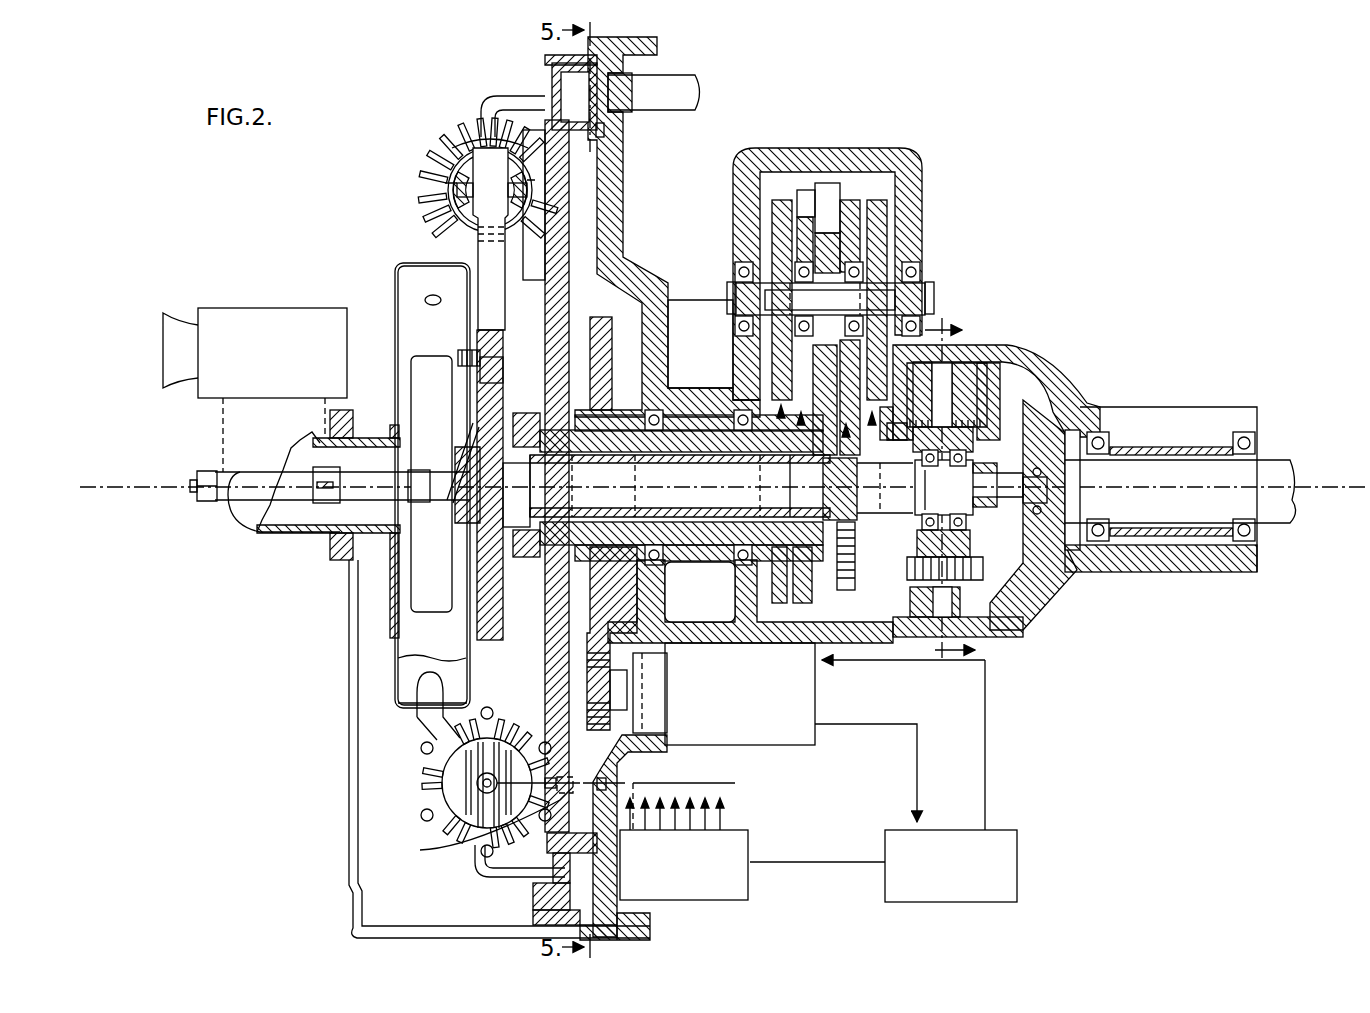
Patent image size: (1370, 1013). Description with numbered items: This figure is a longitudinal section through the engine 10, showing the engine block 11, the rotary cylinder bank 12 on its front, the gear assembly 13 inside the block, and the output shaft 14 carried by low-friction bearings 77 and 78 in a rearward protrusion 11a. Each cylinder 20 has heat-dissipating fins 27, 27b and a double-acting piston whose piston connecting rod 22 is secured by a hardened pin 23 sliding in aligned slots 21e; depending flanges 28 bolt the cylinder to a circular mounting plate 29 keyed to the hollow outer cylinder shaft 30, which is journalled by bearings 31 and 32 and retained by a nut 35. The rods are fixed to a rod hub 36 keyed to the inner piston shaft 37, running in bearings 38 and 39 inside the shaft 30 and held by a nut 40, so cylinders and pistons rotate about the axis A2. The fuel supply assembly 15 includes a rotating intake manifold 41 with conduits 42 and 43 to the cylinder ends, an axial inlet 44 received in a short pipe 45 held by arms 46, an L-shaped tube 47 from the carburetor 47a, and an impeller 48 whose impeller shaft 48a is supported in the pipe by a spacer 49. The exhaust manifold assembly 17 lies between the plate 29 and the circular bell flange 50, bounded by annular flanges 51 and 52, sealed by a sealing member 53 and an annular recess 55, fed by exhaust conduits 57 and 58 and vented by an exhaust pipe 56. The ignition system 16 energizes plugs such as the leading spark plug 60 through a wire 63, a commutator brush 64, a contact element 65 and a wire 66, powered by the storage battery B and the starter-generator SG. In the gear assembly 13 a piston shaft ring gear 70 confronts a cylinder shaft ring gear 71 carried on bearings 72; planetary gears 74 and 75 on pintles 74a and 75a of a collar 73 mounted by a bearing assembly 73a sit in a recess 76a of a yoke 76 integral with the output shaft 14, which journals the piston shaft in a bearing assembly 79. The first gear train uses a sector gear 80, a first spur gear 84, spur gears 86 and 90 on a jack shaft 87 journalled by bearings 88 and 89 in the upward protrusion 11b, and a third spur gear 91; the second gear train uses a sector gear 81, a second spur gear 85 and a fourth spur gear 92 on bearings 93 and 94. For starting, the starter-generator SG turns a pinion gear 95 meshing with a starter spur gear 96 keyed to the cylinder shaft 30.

The engine 10 is at (509, 204).
The engine block 11 is at (698, 388).
The rearward protrusion 11a is at (1187, 407).
The hollow upward protrusion 11b is at (916, 166).
The rotary cylinder bank 12 is at (544, 313).
The gear assembly 13 is at (850, 345).
The output shaft 14 is at (1288, 468).
The fuel supply assembly 15 is at (258, 530).
The ignition system 16 is at (740, 846).
The exhaust manifold assembly 17 is at (556, 90).
The cylinder 20 is at (464, 136).
The aligned slots 21e is at (445, 180).
The piston connecting rod 22 is at (481, 220).
The hardened pin 23 is at (458, 190).
The fins 27 is at (428, 148).
The cooling fins 27b is at (425, 762).
The depending flanges 28 is at (550, 243).
The circular mounting plate 29 is at (603, 262).
The hollow outer cylinder shaft 30 is at (593, 532).
The low-friction bearing 31 is at (637, 560).
The low-friction bearing 32 is at (733, 570).
The nut 35 is at (525, 412).
The rod hub 36 is at (508, 362).
The inner piston shaft 37 is at (536, 495).
The low-friction bearing 38 is at (530, 565).
The low-friction bearing 39 is at (788, 520).
The nut 40 is at (458, 518).
The hollow intake manifold 41 is at (398, 665).
The conduit 42 is at (417, 716).
The conduit 43 is at (425, 256).
The axial inlet 44 is at (392, 545).
The short pipe 45 is at (366, 437).
The arms 46 is at (349, 735).
The L-shaped tube 47 is at (238, 512).
The carburetor 47a is at (268, 308).
The impeller 48 is at (422, 370).
The impeller shaft 48a is at (368, 486).
The collar 49 is at (320, 518).
The circular bell flange 50 is at (638, 933).
The inner annular flange 51 is at (568, 834).
The outer annular flange 52 is at (533, 891).
The annular sealing member 53 is at (533, 915).
The annular recess 55 is at (604, 125).
The exhaust pipe 56 is at (681, 82).
The exhaust conduit 57 is at (475, 872).
The exhaust conduit 58 is at (497, 96).
The leading spark plug 60 is at (459, 766).
The wire 63 is at (628, 781).
The commutator brush 64 is at (588, 783).
The contact element 65 is at (484, 825).
The wire 66 is at (495, 745).
The piston shaft ring gear 70 is at (1020, 378).
The cylinder shaft ring gear 71 is at (888, 424).
The low-friction bearings 72 is at (824, 352).
The collar 73 is at (984, 420).
The bearing assembly 73a is at (954, 462).
The planetary gear 74 is at (951, 392).
The pintle 74a is at (946, 365).
The planetary gear 75 is at (916, 595).
The pintle 75a is at (958, 603).
The yoke 76 is at (1020, 626).
The recess 76a is at (1022, 590).
The low-friction bearing 77 is at (1103, 426).
The low-friction bearing 78 is at (1246, 428).
The low-friction bearing assembly 79 is at (1030, 514).
The sector gear 80 is at (804, 190).
The sector gear 81 is at (804, 586).
The first spur gear 84 is at (775, 582).
The second spur gear 85 is at (846, 584).
The spur gear 86 is at (775, 221).
The jack shaft 87 is at (727, 290).
The bearing 88 is at (730, 318).
The bearing 89 is at (921, 270).
The spur gear 90 is at (888, 210).
The third spur gear 91 is at (915, 562).
The fourth spur gear 92 is at (829, 208).
The bearing 93 is at (800, 268).
The bearing 94 is at (860, 268).
The pinion gear 95 is at (610, 672).
The starter spur gear 96 is at (603, 348).
The starter-generator assembly SG is at (815, 698).
The storage battery B is at (956, 900).
The axis of rotation A2 is at (98, 483).